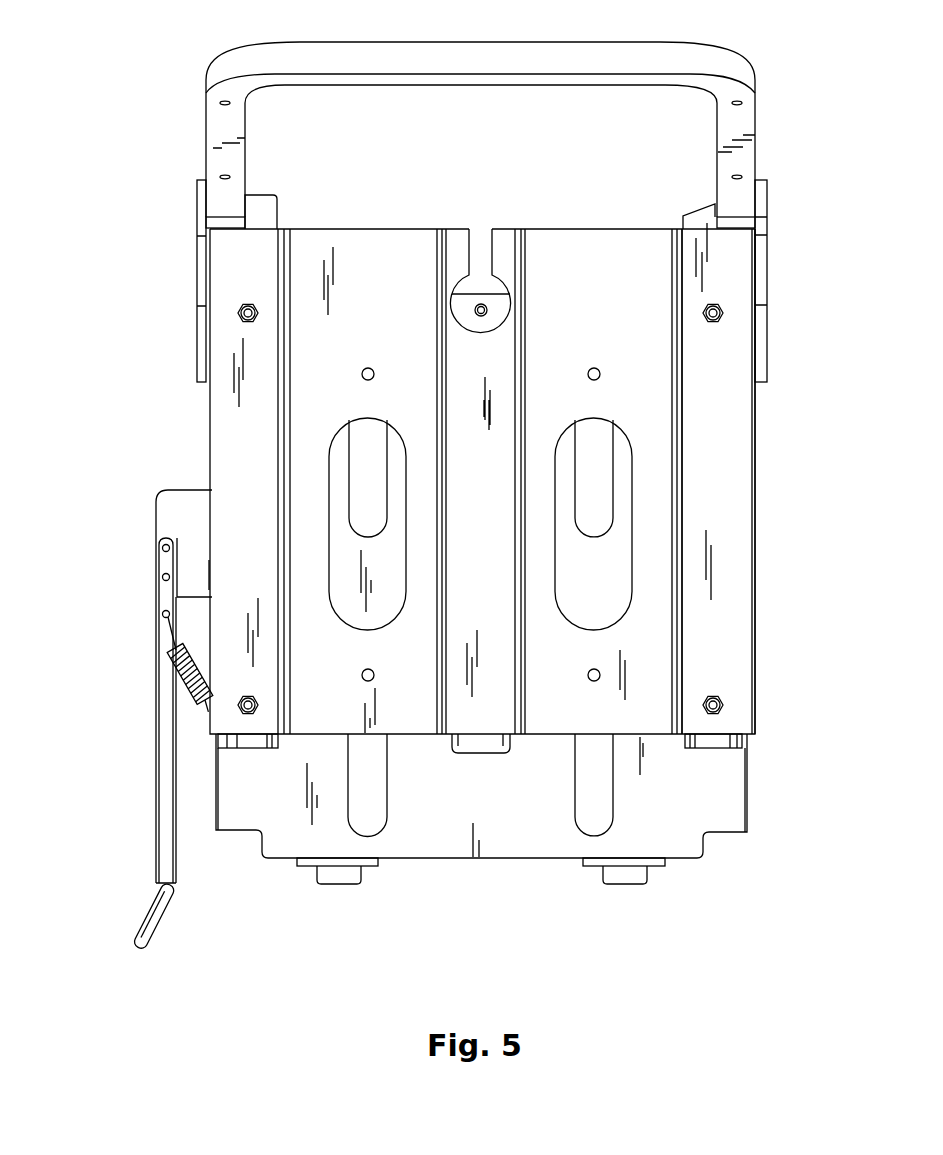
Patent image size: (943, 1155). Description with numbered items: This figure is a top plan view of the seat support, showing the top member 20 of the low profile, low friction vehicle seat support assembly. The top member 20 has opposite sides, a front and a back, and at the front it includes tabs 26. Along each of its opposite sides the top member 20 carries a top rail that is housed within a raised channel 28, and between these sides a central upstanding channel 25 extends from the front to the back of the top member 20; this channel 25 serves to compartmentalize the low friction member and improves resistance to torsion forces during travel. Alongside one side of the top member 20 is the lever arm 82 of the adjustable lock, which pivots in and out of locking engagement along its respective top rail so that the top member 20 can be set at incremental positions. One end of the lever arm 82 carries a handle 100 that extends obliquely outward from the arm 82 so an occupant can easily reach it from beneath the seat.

The top member 20 is at (588, 303).
The central upstanding channel 25 is at (457, 228).
The tabs 26 is at (620, 885).
The raised channel 28 is at (737, 485).
The lever arm 82 is at (155, 795).
The handle 100 is at (163, 918).